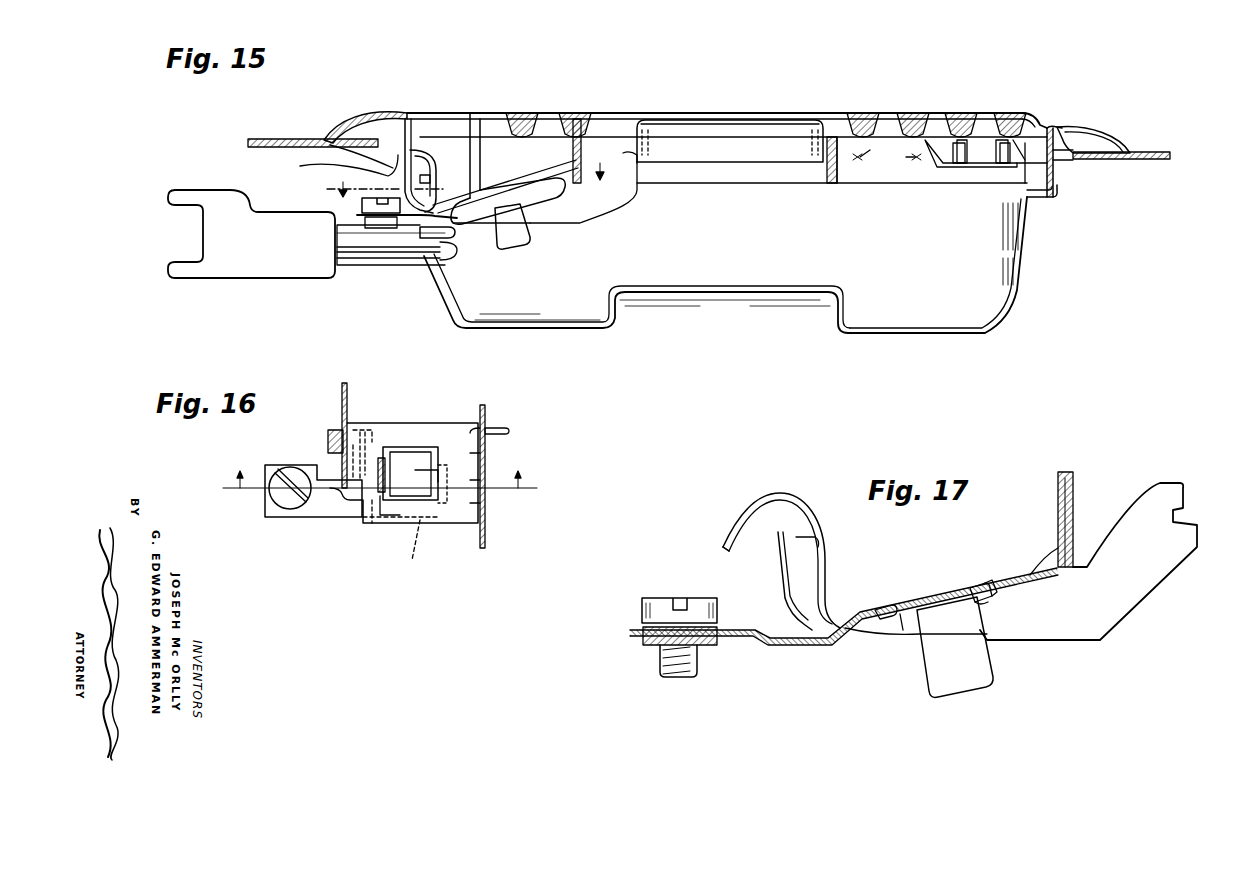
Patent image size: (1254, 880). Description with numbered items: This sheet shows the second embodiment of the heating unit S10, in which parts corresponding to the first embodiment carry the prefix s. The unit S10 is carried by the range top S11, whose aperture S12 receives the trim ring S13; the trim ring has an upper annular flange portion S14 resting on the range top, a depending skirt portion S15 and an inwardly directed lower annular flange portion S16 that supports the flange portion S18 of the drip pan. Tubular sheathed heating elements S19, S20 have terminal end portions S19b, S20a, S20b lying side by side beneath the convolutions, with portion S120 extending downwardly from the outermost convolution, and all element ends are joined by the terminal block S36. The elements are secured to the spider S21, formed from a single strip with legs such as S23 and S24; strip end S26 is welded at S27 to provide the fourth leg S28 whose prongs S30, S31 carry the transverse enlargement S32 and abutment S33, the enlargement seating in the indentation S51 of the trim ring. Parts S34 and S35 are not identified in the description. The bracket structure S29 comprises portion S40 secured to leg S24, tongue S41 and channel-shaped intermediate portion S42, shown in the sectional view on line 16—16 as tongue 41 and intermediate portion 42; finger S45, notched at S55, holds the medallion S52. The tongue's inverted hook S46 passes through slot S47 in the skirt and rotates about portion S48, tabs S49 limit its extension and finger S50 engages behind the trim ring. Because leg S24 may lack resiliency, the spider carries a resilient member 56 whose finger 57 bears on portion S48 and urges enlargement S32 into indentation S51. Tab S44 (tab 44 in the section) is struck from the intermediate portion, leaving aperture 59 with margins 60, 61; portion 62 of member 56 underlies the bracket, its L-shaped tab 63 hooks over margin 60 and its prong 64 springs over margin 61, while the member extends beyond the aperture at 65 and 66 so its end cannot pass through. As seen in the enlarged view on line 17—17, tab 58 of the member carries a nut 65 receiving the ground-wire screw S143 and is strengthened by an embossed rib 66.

In FIG. 15, the heating unit S10 is at (855, 76).
In FIG. 15, the range top S11 is at (1142, 150).
In FIG. 15, the aperture S12 is at (1095, 130).
In FIG. 15, the trim ring S13 is at (442, 110).
In FIG. 15, the upper annular flange portion S14 is at (1067, 127).
In FIG. 15, the skirt portion S15 is at (408, 160).
In FIG. 15, the lower annular flange portion S16 is at (1033, 200).
In FIG. 15, the flange portion of drip pan S18 is at (1032, 162).
In FIG. 15, the heating element S19 is at (1010, 108).
In FIG. 15, the terminal end portion S19b is at (455, 252).
In FIG. 15, the heating element S20 is at (948, 110).
In FIG. 15, the terminal end portion S20a is at (412, 250).
In FIG. 15, the terminal end portion S20b is at (375, 248).
In FIG. 15, the spider S21 is at (708, 185).
In FIG. 15, the leg S23 is at (752, 170).
In FIG. 15, the leg S24 is at (570, 208).
In FIG. 16, the leg S24 is at (488, 470).
In FIG. 17, the leg S24 is at (1075, 490).
In FIG. 15, the strip end S26 is at (880, 175).
In FIG. 15, the weld S27 is at (887, 158).
In FIG. 15, the fourth leg S28 is at (837, 187).
In FIG. 15, the bracket structure S29 is at (577, 225).
In FIG. 16, the bracket structure S29 is at (335, 392).
In FIG. 17, the bracket structure S29 is at (768, 470).
In FIG. 15, the prong S30 is at (933, 170).
In FIG. 15, the prong S31 is at (985, 167).
In FIG. 15, the transverse enlargement S32 is at (1052, 195).
In FIG. 15, the abutment S33 is at (976, 165).
In FIG. 15, the block S34 is at (1005, 170).
In FIG. 15, the post S35 is at (962, 140).
In FIG. 15, the terminal block S36 is at (205, 270).
In FIG. 15, the portion S40 is at (572, 143).
In FIG. 16, the portion S40 is at (470, 430).
In FIG. 17, the portion S40 is at (1057, 500).
In FIG. 15, the tongue portion S41 is at (390, 158).
In FIG. 17, the tongue portion S41 is at (730, 520).
In FIG. 15, the intermediate channel shaped portion S42 is at (520, 236).
In FIG. 17, the intermediate channel shaped portion S42 is at (858, 626).
In FIG. 15, the tab S44 is at (513, 238).
In FIG. 17, the tab S44 is at (955, 690).
In FIG. 15, the finger S45 is at (625, 195).
In FIG. 16, the finger S45 is at (508, 428).
In FIG. 17, the finger S45 is at (1140, 585).
In FIG. 15, the inverted hook S46 is at (335, 140).
In FIG. 17, the inverted hook S46 is at (745, 502).
In FIG. 15, the horizontal slot S47 is at (396, 165).
In FIG. 15, the portion of trim ring S48 is at (305, 165).
In FIG. 15, the tabs S49 is at (432, 165).
In FIG. 17, the tabs S49 is at (808, 538).
In FIG. 17, the finger S50 is at (723, 547).
In FIG. 15, the indentation S51 is at (1053, 165).
In FIG. 15, the medallion S52 is at (724, 118).
In FIG. 15, the notch S55 is at (637, 160).
In FIG. 17, the notch S55 is at (1175, 512).
In FIG. 15, the portion S120 is at (474, 112).
In FIG. 15, the screw S143 is at (360, 203).
In FIG. 16, the screw S143 is at (283, 503).
In FIG. 17, the screw S143 is at (640, 610).
In FIG. 15, the line 16— 16 is at (470, 168).
In FIG. 16, the line 17— 17 is at (380, 497).
In FIG. 16, the tongue portion 41 is at (350, 400).
In FIG. 16, the intermediate portion 42 is at (407, 423).
In FIG. 16, the tab 44 is at (395, 447).
In FIG. 15, the resilient member 56 is at (440, 228).
In FIG. 16, the resilient member 56 is at (305, 518).
In FIG. 17, the resilient member 56 is at (770, 648).
In FIG. 15, the resilient finger 57 is at (518, 150).
In FIG. 16, the resilient finger 57 is at (328, 432).
In FIG. 17, the resilient finger 57 is at (778, 565).
In FIG. 15, the tab 58 is at (357, 215).
In FIG. 16, the tab 58 is at (275, 465).
In FIG. 17, the tab 58 is at (630, 634).
In FIG. 16, the aperture 59 is at (405, 510).
In FIG. 17, the aperture 59 is at (977, 582).
In FIG. 16, the margin 60 is at (385, 505).
In FIG. 17, the margin 60 is at (897, 625).
In FIG. 16, the margin 61 is at (428, 450).
In FIG. 17, the margin 61 is at (990, 596).
In FIG. 16, the portion 62 is at (425, 505).
In FIG. 17, the portion 62 is at (860, 637).
In FIG. 16, the L-shaped tab 63 is at (378, 480).
In FIG. 17, the L-shaped tab 63 is at (882, 605).
In FIG. 17, the prong 64 is at (995, 580).
In FIG. 15, the nut 65 is at (366, 224).
In FIG. 16, the nut 65 is at (450, 483).
In FIG. 17, the nut 65 is at (700, 650).
In FIG. 16, the rib 66 is at (410, 550).
In FIG. 17, the rib 66 is at (810, 648).